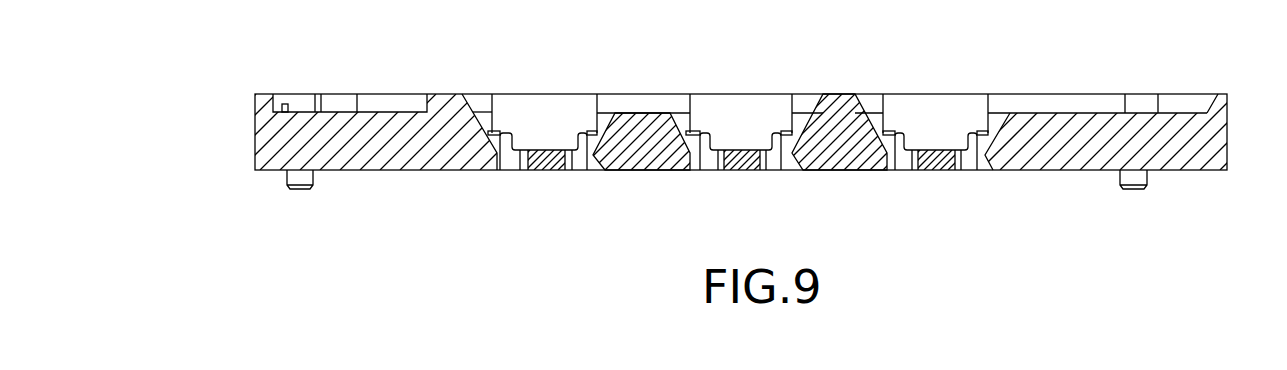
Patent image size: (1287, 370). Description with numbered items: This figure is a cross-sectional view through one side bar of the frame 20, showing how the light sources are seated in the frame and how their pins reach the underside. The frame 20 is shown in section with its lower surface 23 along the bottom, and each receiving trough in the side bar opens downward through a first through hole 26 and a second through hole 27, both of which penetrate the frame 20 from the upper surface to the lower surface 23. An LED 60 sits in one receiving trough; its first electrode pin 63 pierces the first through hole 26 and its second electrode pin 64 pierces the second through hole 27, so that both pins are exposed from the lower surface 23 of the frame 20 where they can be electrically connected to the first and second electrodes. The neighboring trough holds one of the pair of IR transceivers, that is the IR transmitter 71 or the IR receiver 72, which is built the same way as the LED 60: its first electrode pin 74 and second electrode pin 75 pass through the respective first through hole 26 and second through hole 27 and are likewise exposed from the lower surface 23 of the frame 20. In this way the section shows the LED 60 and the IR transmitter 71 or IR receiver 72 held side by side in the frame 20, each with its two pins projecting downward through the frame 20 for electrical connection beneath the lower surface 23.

The frame 20 is at (256, 140).
The lower surface 23 is at (342, 170).
The first through hole 26 is at (498, 167).
The second through hole 27 is at (592, 167).
The LED 60 is at (540, 110).
The first electrode pin 63 is at (511, 163).
The second electrode pin 64 is at (577, 163).
The IR transmitter 71 is at (736, 110).
The IR receiver 72 is at (741, 86).
The first electrode pin 74 is at (707, 163).
The second electrode pin 75 is at (767, 163).